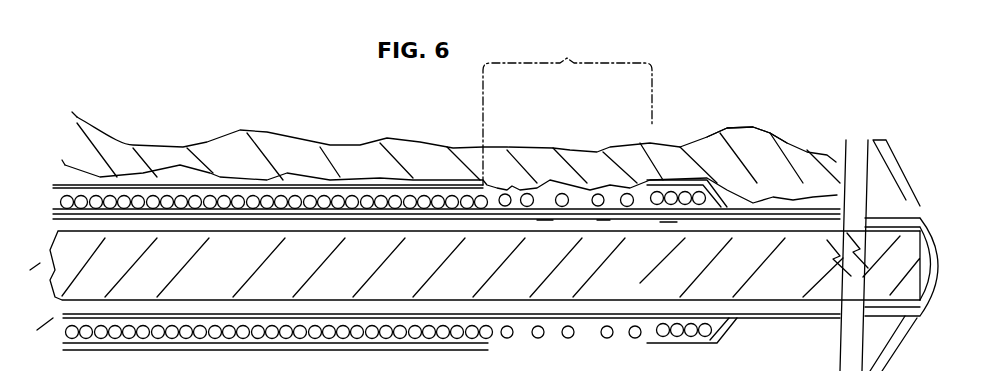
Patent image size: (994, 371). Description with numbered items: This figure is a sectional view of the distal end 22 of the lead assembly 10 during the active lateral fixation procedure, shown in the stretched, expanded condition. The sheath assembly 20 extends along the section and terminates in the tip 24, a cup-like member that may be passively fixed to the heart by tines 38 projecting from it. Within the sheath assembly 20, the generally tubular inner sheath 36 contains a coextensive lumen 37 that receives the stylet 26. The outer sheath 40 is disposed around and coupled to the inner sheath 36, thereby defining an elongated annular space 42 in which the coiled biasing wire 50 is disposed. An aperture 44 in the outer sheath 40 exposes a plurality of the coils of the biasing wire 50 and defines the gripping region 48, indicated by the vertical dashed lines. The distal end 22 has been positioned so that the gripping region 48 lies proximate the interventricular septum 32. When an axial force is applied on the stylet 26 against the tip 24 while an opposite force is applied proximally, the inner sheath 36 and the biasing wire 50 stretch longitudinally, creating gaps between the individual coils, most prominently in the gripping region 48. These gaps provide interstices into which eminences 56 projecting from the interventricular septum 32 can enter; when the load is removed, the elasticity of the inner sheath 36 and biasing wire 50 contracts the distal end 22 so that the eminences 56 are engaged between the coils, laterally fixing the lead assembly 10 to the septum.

The lead assembly 10 is at (268, 93).
The sheath assembly 20 is at (53, 180).
The distal end 22 is at (332, 137).
The tip 24 is at (920, 210).
The stylet 26 is at (742, 230).
The interventricular septum 32 is at (773, 135).
The inner sheath 36 is at (827, 155).
The lumen 37 is at (362, 223).
The tines 38 is at (887, 357).
The outer sheath 40 is at (415, 190).
The annular space 42 is at (207, 195).
The aperture 44 is at (630, 195).
The gripping region 48 is at (612, 60).
The biasing wire 50 is at (527, 206).
The eminences 56 is at (568, 195).